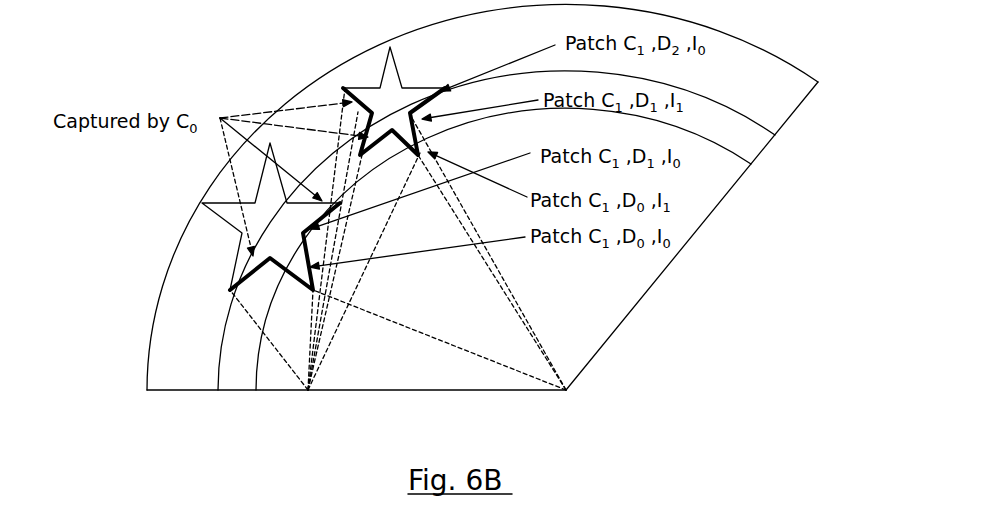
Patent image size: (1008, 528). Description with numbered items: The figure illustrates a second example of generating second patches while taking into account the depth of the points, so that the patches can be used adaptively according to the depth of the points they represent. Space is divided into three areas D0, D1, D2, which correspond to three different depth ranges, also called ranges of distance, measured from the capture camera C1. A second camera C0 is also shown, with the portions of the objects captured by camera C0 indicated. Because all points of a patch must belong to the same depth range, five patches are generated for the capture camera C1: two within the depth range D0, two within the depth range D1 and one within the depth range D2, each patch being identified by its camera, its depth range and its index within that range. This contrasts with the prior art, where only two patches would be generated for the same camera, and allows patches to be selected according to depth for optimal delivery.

The camera C0 is at (325, 259).
The capture camera C1 is at (446, 274).
The depth range D0 is at (503, 249).
The depth range D1 is at (533, 230).
The depth range D2 is at (515, 197).